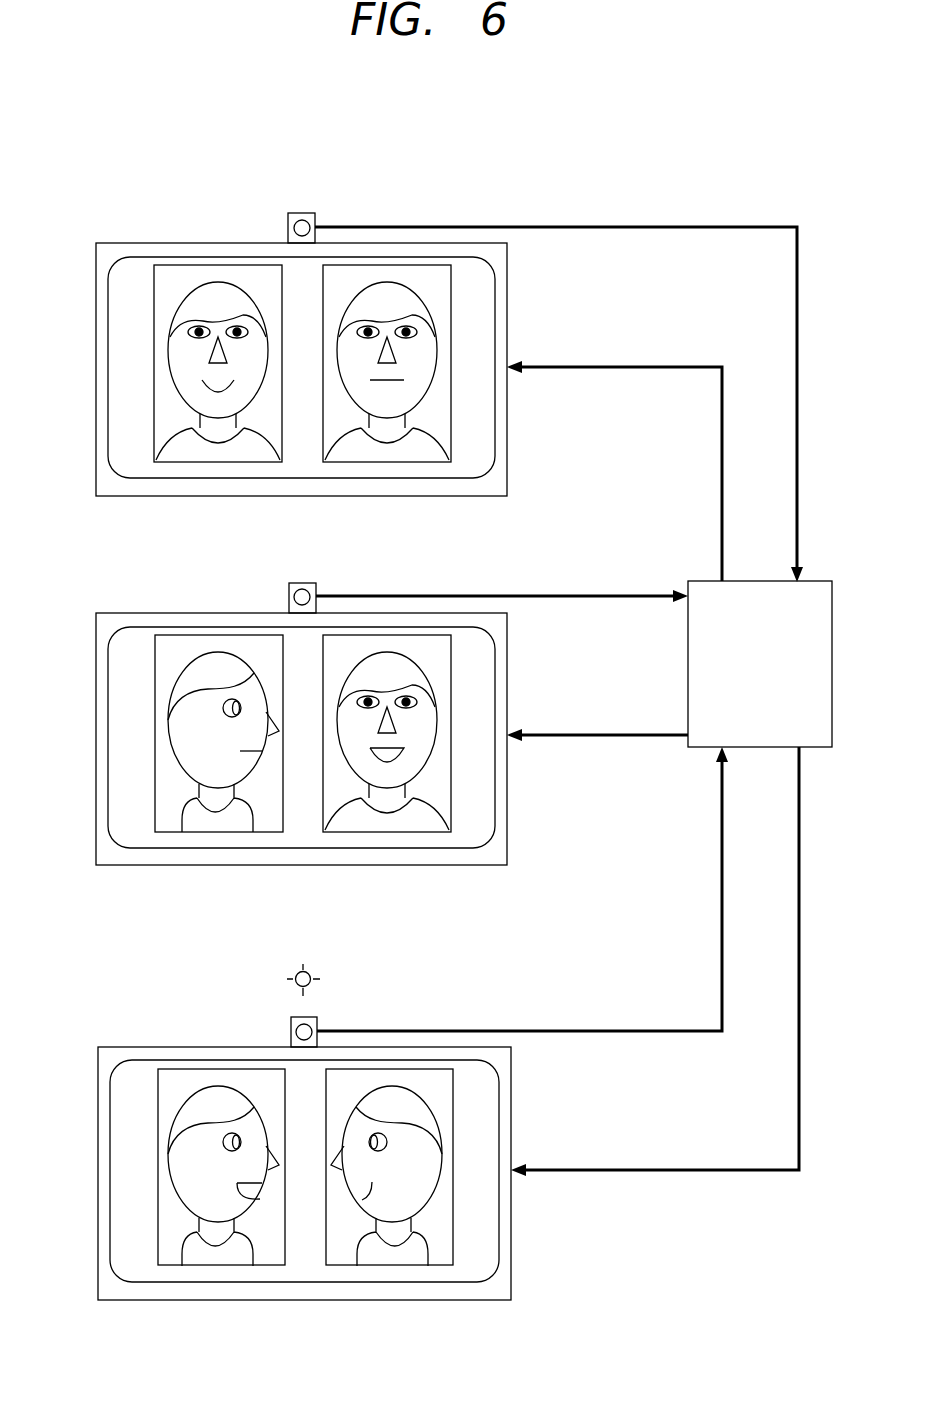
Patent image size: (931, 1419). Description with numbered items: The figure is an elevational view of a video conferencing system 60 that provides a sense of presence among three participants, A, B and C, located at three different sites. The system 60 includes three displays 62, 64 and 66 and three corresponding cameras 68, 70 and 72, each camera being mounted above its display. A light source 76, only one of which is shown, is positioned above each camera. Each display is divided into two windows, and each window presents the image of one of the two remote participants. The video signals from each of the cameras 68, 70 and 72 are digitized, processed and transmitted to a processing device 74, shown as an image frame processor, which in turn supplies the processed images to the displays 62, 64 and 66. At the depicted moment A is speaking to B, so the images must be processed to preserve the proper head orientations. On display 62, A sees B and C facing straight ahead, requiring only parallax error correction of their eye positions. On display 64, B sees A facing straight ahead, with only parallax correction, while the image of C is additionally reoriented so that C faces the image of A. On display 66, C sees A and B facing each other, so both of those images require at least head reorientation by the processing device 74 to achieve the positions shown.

The video conferencing system 60 is at (451, 156).
The display 62 is at (508, 273).
The display 64 is at (508, 678).
The display 66 is at (512, 1107).
The camera 68 is at (292, 213).
The camera 70 is at (292, 583).
The camera 72 is at (317, 1018).
The processing device 74 is at (700, 749).
The light source 76 is at (297, 972).